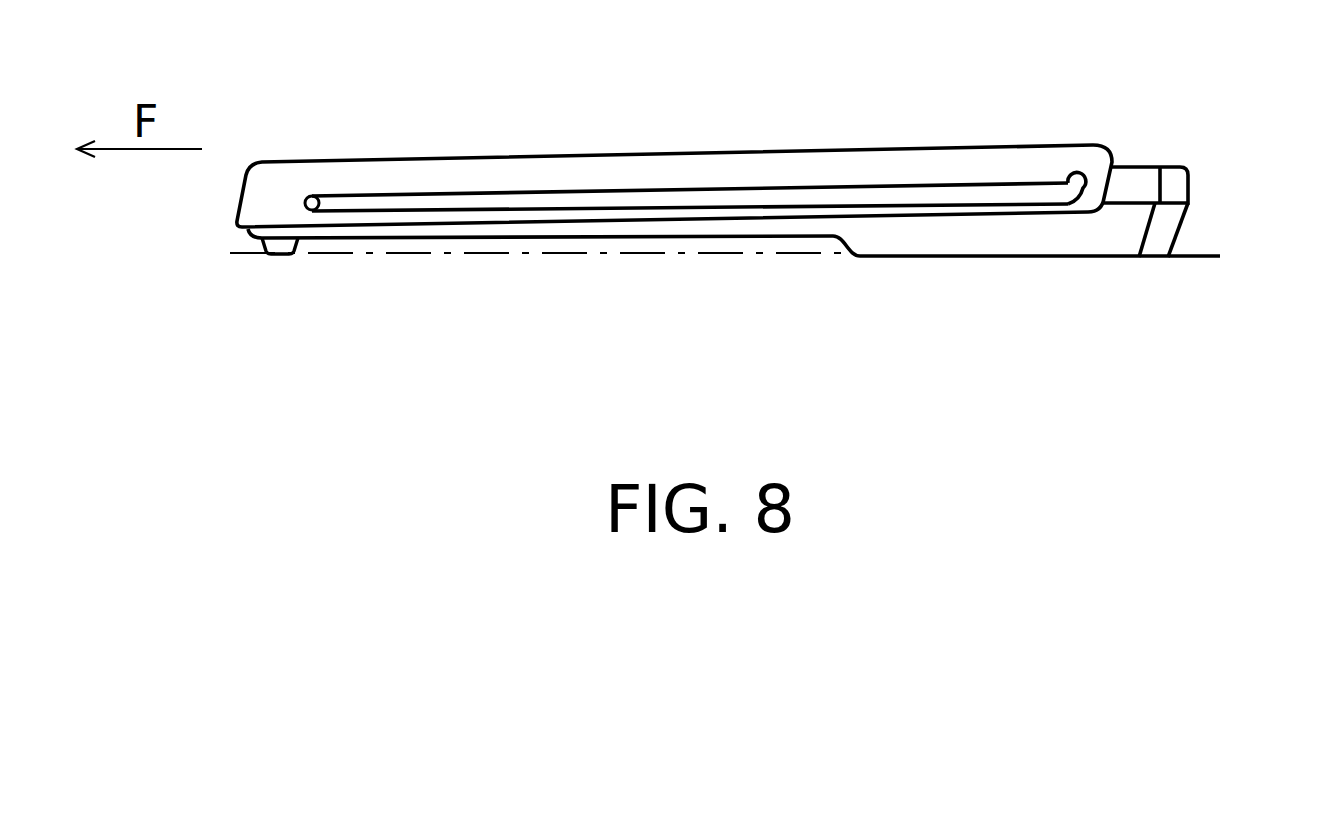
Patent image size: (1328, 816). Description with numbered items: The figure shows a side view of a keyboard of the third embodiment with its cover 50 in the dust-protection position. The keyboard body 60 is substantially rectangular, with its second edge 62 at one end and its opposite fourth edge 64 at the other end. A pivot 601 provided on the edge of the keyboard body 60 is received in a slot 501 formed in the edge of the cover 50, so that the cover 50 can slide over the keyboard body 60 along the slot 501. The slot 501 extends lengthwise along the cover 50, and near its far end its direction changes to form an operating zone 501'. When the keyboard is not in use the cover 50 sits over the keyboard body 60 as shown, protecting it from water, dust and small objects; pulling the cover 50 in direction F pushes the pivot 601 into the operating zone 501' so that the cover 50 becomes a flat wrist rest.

The cover 50 is at (762, 152).
The slot 501 is at (690, 255).
The operating zone 501' is at (1114, 258).
The pivot 601 is at (312, 208).
The keyboard body 60 is at (943, 258).
The second edge 62 is at (250, 235).
The fourth edge 64 is at (1193, 183).